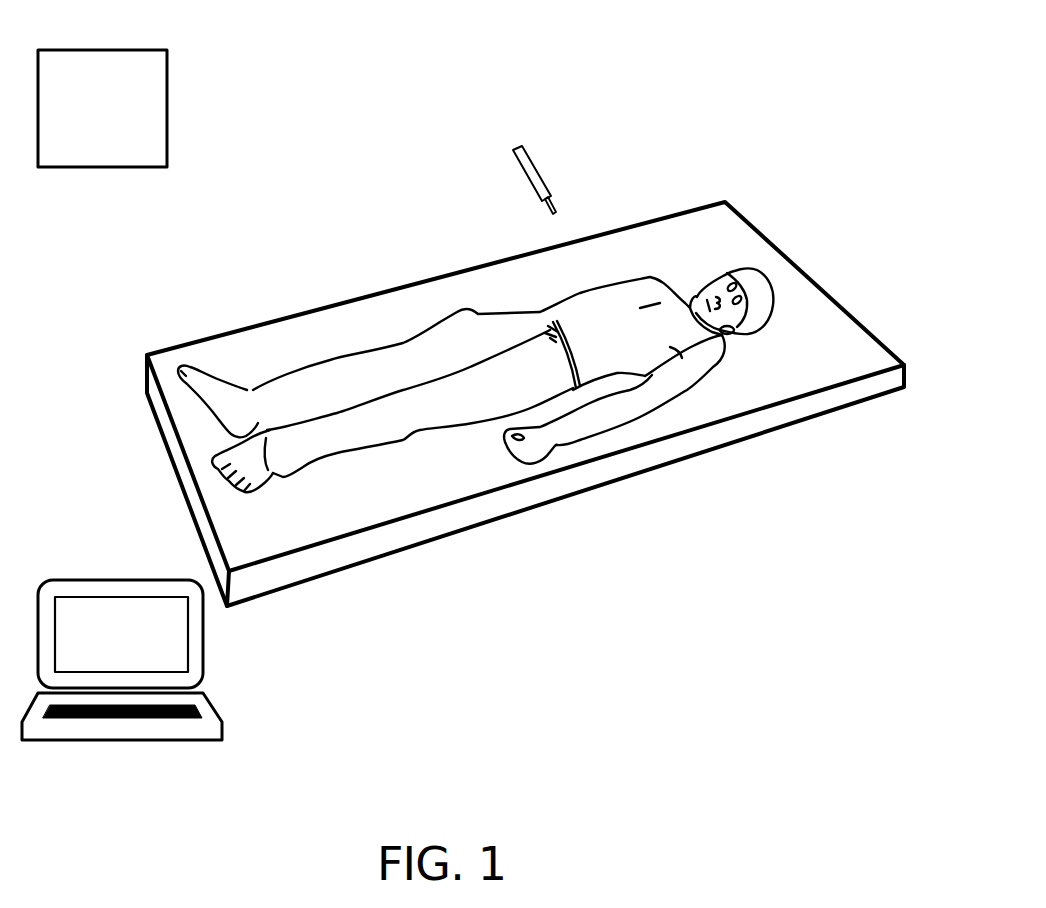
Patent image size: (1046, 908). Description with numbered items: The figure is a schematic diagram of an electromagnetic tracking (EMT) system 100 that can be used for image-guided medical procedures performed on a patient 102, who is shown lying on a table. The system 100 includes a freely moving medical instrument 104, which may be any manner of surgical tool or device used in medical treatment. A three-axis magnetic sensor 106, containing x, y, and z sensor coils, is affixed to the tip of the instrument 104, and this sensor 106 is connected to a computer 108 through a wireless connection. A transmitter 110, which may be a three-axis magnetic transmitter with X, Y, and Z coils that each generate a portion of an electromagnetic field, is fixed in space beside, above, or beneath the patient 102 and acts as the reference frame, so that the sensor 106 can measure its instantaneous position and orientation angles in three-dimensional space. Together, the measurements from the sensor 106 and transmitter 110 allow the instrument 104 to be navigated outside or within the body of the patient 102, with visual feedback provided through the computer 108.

The EMT system 100 is at (734, 94).
The patient 102 is at (687, 349).
The medical instrument 104 is at (533, 167).
The three-axis magnetic sensor 106 is at (556, 211).
The computer 108 is at (82, 580).
The transmitter 110 is at (126, 89).